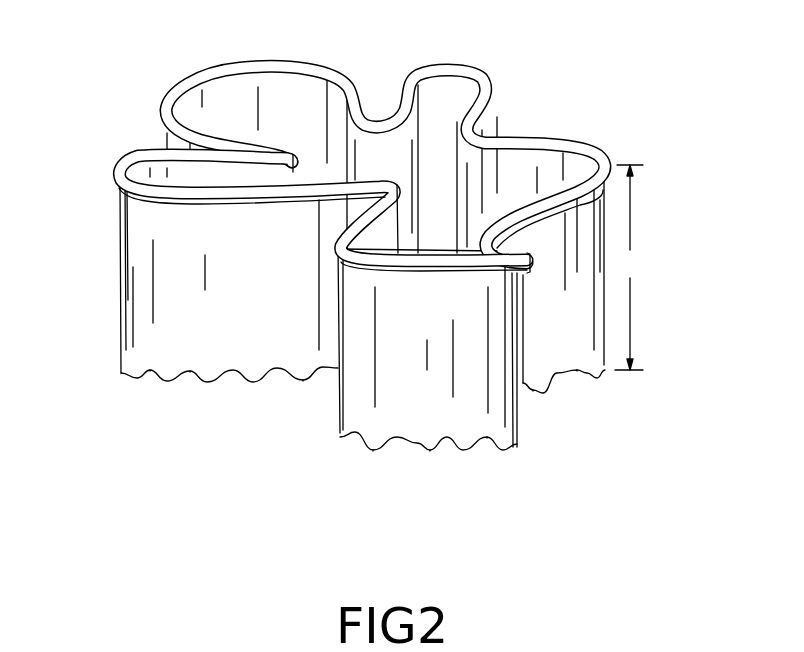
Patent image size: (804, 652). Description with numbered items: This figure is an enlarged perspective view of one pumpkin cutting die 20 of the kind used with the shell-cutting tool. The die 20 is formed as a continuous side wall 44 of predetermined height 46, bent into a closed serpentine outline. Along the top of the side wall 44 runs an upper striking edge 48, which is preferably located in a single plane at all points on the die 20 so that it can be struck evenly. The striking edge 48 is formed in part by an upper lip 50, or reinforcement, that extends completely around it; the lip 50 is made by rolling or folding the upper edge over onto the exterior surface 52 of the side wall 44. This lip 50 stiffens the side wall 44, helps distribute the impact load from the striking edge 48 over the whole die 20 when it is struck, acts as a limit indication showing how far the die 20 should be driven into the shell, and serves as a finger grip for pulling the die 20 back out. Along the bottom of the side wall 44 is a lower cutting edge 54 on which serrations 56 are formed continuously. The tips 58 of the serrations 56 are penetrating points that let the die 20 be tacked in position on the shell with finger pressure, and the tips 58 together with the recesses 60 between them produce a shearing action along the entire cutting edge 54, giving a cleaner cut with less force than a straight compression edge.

The cutting die 20 is at (344, 273).
The side wall 44 is at (143, 282).
The height 46 is at (629, 267).
The upper striking edge 48 is at (327, 70).
The upper lip 50 is at (118, 197).
The exterior surface 52 is at (153, 225).
The lower cutting edge 54 is at (240, 371).
The serrations 56 is at (165, 375).
The tips 58 is at (303, 377).
The recesses 60 is at (187, 377).